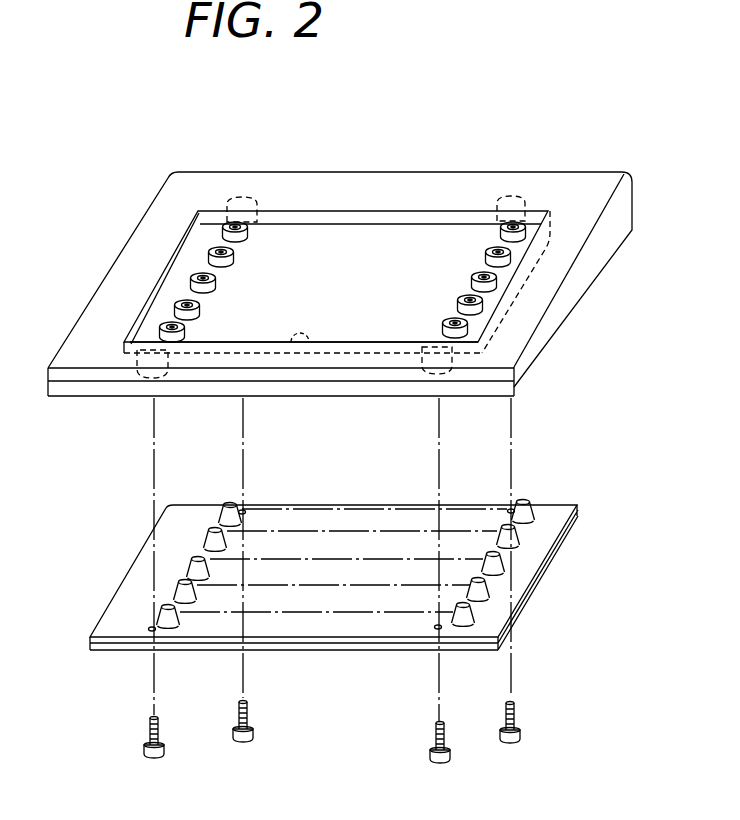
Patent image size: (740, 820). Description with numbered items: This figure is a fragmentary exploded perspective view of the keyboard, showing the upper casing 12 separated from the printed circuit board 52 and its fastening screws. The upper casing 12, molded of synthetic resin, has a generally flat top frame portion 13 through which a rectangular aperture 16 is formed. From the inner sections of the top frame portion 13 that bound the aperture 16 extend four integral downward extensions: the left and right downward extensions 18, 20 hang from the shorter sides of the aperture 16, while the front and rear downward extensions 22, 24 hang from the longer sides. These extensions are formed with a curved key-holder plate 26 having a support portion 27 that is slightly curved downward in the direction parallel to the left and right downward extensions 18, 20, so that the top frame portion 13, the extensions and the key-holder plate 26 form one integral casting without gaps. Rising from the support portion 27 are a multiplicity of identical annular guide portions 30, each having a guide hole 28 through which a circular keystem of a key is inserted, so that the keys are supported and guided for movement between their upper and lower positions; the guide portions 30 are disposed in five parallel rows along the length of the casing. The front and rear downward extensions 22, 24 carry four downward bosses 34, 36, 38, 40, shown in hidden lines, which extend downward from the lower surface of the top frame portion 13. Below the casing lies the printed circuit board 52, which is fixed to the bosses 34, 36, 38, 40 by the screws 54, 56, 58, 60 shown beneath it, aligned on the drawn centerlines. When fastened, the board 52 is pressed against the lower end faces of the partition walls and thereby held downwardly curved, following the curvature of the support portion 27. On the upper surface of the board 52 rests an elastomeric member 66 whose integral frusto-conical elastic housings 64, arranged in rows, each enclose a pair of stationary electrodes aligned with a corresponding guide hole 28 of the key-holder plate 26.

The upper casing 12 is at (395, 153).
The top frame portion 13 is at (438, 179).
The rectangular aperture 16 is at (279, 207).
The left downward extension 18 is at (167, 280).
The right downward extension 20 is at (547, 207).
The front downward extension 22 is at (290, 345).
The rear downward extension 24 is at (336, 215).
The key-holder plate 26 is at (378, 315).
The support portion 27 is at (352, 333).
The guide hole 28 is at (217, 273).
The annular guide portion 30 is at (212, 262).
The downward boss 34 is at (510, 196).
The downward boss 36 is at (240, 198).
The downward boss 38 is at (443, 373).
The downward boss 40 is at (143, 378).
The printed circuit board 52 is at (108, 650).
The screw 54 is at (520, 717).
The screw 56 is at (248, 712).
The screw 58 is at (432, 755).
The screw 60 is at (155, 755).
The frusto-conical elastic housing 64 is at (205, 540).
The elastomeric member 66 is at (112, 623).